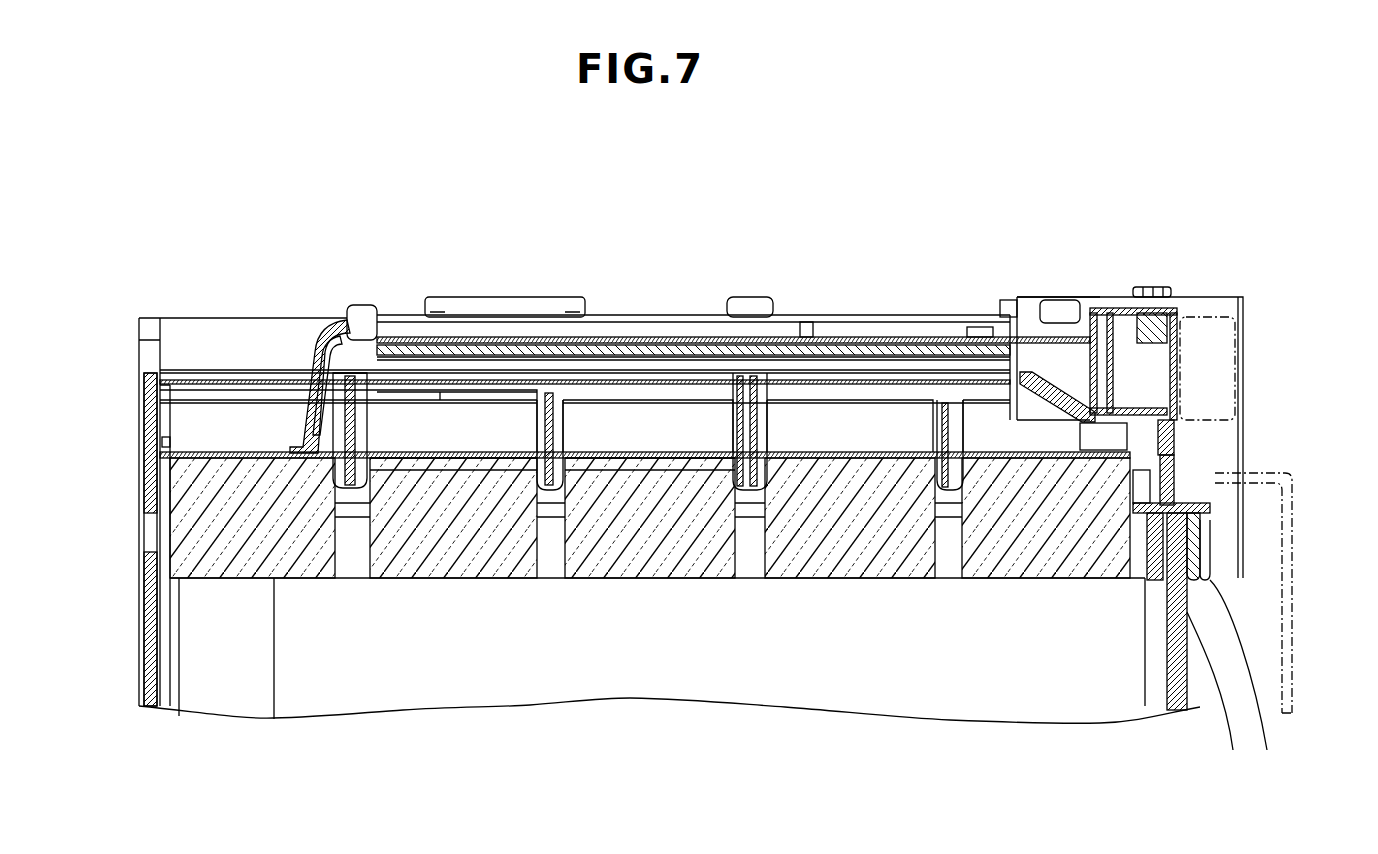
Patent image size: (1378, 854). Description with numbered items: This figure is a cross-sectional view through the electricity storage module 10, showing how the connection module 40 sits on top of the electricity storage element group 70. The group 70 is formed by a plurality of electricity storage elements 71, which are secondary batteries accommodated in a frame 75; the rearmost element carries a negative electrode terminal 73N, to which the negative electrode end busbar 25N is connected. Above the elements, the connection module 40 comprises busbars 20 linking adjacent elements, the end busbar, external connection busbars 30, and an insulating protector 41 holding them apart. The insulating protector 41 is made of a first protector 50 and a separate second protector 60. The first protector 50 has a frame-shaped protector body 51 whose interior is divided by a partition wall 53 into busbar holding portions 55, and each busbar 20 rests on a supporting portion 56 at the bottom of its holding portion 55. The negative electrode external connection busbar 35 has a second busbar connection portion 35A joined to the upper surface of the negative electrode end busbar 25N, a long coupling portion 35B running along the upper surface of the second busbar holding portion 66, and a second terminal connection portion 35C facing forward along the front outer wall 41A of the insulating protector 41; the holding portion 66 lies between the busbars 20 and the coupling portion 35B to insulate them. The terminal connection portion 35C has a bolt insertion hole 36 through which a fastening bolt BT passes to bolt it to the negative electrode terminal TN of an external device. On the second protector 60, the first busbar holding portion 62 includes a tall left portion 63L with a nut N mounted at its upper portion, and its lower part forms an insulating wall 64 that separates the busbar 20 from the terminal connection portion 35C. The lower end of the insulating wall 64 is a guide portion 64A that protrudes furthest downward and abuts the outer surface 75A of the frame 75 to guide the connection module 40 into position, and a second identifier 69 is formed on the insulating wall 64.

The electricity storage module 10 is at (980, 210).
The busbar 20 is at (830, 450).
The negative electrode end busbar 25N is at (237, 447).
The external connection busbar 30 is at (693, 350).
The negative electrode external connection busbar 35 is at (669, 325).
The second busbar connection portion 35A is at (283, 433).
The long coupling portion 35B is at (467, 335).
The second terminal connection portion 35C is at (1177, 435).
The bolt insertion hole 36 is at (1177, 355).
The connection module 40 is at (400, 270).
The insulating protector 41 is at (798, 303).
The front outer wall 41A is at (1173, 453).
The first protector 50 is at (136, 410).
The protector body 51 is at (192, 412).
The partition wall 53 is at (762, 412).
The busbar holding portion 55 is at (513, 420).
The supporting portion 56 is at (955, 490).
The second protector 60 is at (1040, 446).
The first busbar holding portion 62 is at (1236, 541).
The left portion 63L is at (1203, 307).
The insulating wall 64 is at (1173, 463).
The guide portion 64A is at (1210, 530).
The second busbar holding portion 66 is at (916, 347).
The second identifier 69 is at (1249, 677).
The electricity storage element group 70 is at (627, 802).
The electricity storage element 71 is at (407, 553).
The negative electrode terminal 73N is at (452, 480).
The frame 75 is at (1200, 708).
The outer surface 75A is at (1224, 705).
The nut N is at (1150, 330).
The fastening bolt BT is at (1237, 363).
The negative electrode terminal TN is at (1290, 618).